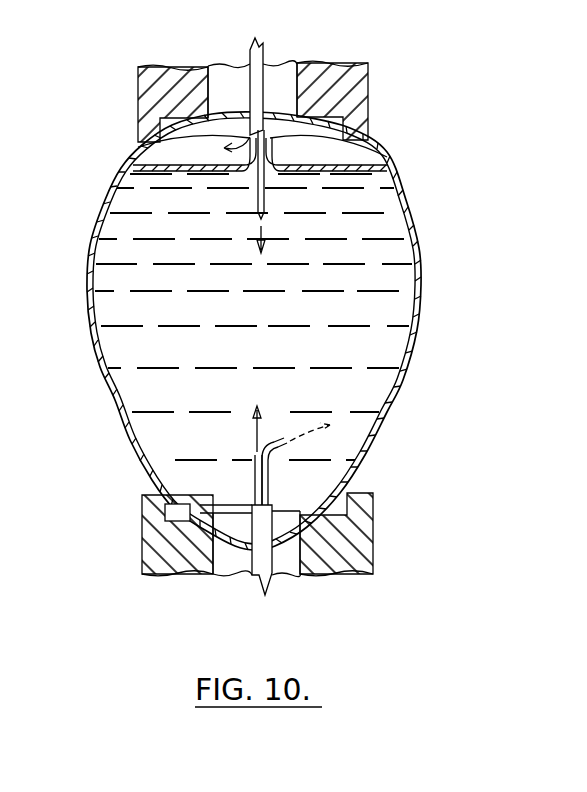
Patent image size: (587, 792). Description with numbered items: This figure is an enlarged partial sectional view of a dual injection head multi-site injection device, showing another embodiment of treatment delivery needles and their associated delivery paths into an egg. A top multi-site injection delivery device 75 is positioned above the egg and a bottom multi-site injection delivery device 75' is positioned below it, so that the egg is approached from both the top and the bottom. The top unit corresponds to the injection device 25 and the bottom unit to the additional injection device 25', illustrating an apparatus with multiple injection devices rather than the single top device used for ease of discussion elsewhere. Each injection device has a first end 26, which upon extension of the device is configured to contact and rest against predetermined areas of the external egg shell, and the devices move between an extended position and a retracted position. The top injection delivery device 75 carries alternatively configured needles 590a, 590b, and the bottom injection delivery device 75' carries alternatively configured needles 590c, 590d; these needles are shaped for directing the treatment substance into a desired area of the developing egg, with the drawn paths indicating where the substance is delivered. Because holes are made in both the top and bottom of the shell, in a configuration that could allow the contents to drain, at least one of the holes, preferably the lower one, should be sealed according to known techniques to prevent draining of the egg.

The top multi-site injection delivery device 75 is at (285, 134).
The bottom multi-site injection delivery device 75' is at (279, 512).
The injection device 25 is at (148, 103).
The injection device 25' is at (144, 538).
The first end 26 is at (370, 82).
The needle 590a is at (142, 145).
The needle 590b is at (346, 117).
The needle 590c is at (253, 482).
The needle 590d is at (286, 452).